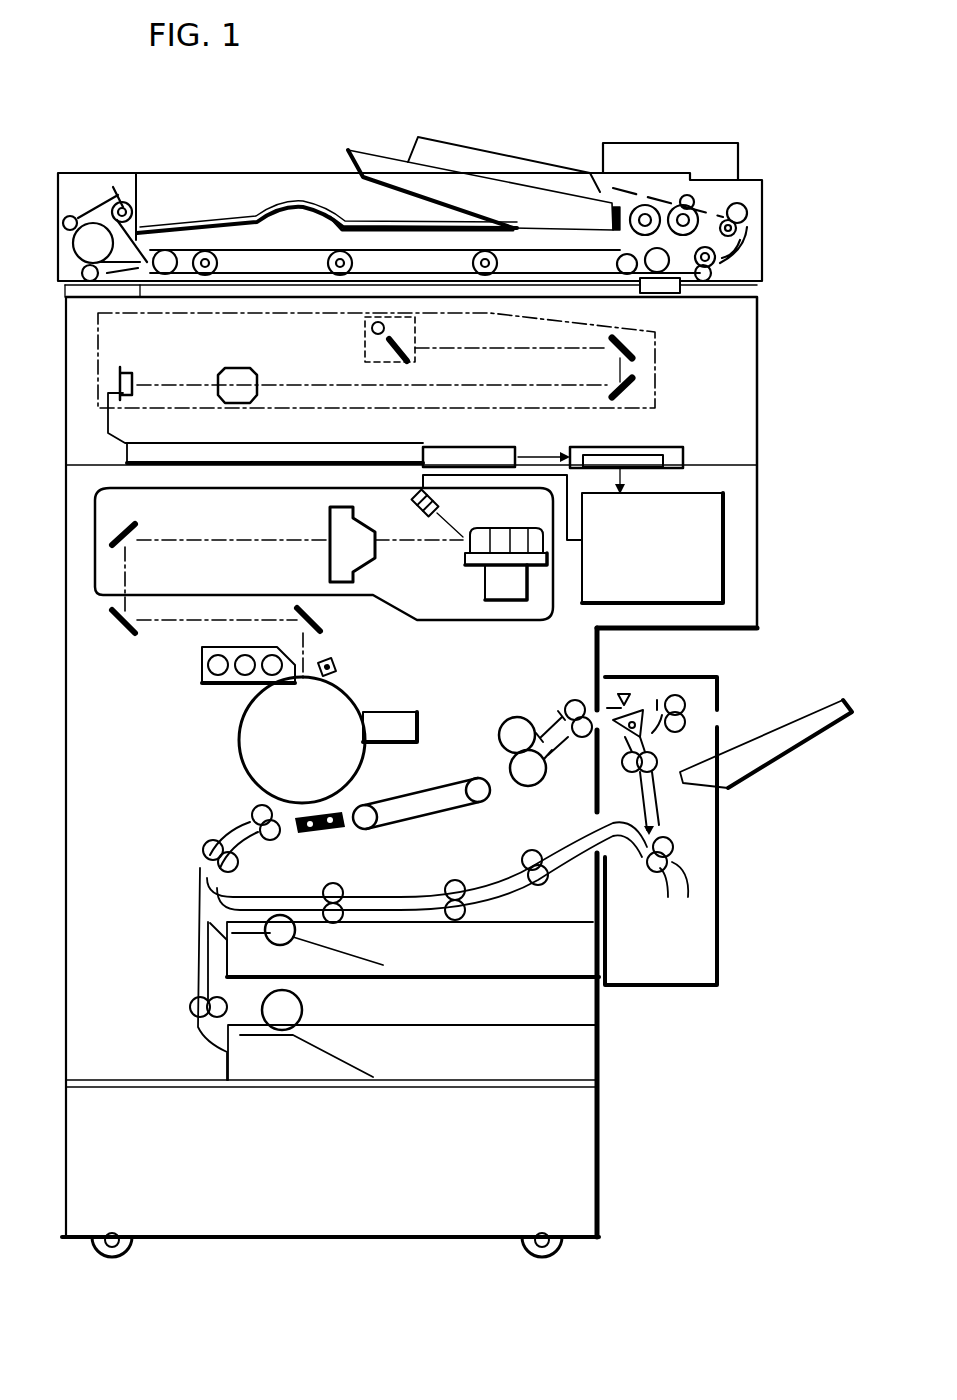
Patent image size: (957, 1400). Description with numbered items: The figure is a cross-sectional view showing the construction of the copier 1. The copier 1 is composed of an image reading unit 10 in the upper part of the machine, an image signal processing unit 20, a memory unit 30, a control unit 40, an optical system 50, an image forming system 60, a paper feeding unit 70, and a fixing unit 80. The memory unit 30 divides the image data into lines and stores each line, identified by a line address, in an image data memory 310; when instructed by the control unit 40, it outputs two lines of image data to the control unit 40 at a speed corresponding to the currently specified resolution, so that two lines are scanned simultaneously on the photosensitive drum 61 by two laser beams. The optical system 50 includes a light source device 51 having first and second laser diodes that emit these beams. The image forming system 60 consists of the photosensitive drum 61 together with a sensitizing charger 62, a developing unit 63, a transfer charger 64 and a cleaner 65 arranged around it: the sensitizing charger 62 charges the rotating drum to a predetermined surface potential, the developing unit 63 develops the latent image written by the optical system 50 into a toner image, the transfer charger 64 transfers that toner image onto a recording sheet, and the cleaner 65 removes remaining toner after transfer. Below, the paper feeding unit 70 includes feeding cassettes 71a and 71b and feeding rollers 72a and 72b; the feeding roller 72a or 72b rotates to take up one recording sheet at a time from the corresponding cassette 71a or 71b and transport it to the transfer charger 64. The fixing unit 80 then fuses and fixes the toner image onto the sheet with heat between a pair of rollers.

The copier 1 is at (347, 131).
The image reading unit 10 is at (88, 348).
The image signal processing unit 20 is at (415, 462).
The memory unit 30 is at (598, 443).
The image data memory 310 is at (645, 453).
The control unit 40 is at (710, 533).
The optical system 50 is at (245, 500).
The light source device 51 is at (414, 498).
The image forming system 60 is at (407, 698).
The photosensitive drum 61 is at (271, 738).
The sensitizing charger 62 is at (332, 668).
The developing unit 63 is at (200, 682).
The transfer charger 64 is at (332, 828).
The cleaner 65 is at (406, 727).
The paper feeding unit 70 is at (183, 981).
The feeding cassette 71a is at (568, 982).
The feeding cassette 71b is at (575, 1068).
The feeding roller 72a is at (272, 936).
The feeding roller 72b is at (292, 1012).
The fixing unit 80 is at (513, 790).